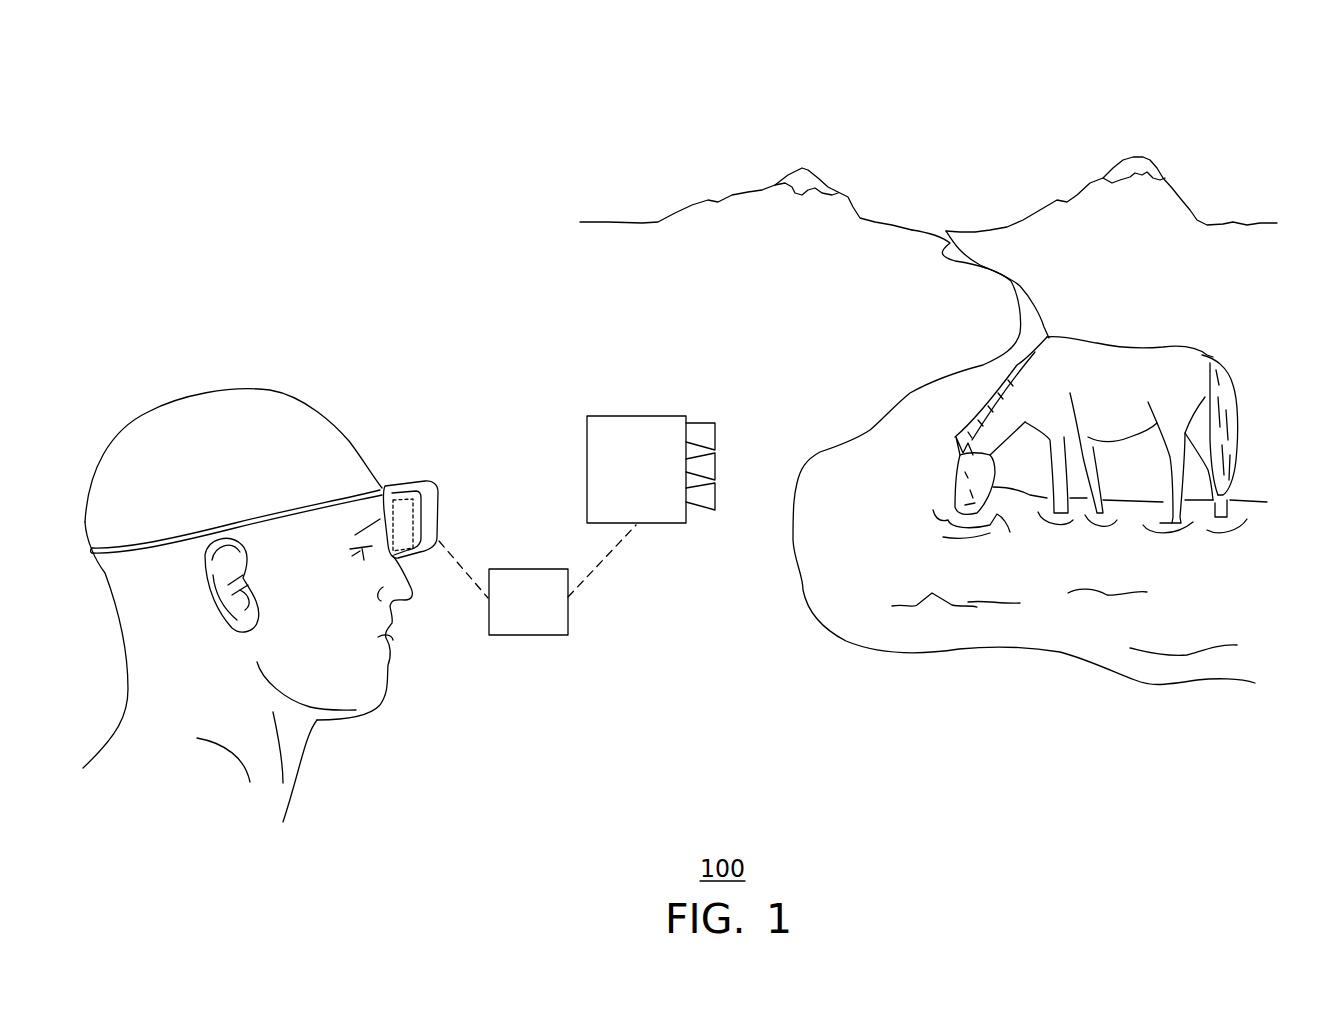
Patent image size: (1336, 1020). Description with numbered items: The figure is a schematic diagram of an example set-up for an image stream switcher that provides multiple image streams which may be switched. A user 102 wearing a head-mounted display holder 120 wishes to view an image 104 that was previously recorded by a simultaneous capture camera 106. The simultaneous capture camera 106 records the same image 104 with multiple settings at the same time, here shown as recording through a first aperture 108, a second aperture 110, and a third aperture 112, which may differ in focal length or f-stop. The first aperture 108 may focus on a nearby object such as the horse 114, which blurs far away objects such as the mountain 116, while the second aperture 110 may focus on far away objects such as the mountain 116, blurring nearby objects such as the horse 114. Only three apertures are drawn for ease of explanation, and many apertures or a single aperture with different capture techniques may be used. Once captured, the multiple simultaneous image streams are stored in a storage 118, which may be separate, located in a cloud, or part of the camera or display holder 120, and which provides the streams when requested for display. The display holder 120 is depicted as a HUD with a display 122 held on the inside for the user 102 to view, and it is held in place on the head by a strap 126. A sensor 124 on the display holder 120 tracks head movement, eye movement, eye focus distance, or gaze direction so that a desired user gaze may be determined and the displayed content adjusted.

The user 102 is at (311, 402).
The image 104 is at (1317, 89).
The simultaneous capture camera 106 is at (618, 415).
The first aperture 108 is at (718, 504).
The second aperture 110 is at (718, 467).
The third aperture 112 is at (718, 426).
The horse 114 is at (1160, 343).
The mountain 116 is at (1151, 158).
The storage 118 is at (524, 637).
The display holder 120 is at (409, 481).
The display 122 is at (416, 527).
The sensor 124 is at (413, 506).
The strap 126 is at (289, 514).